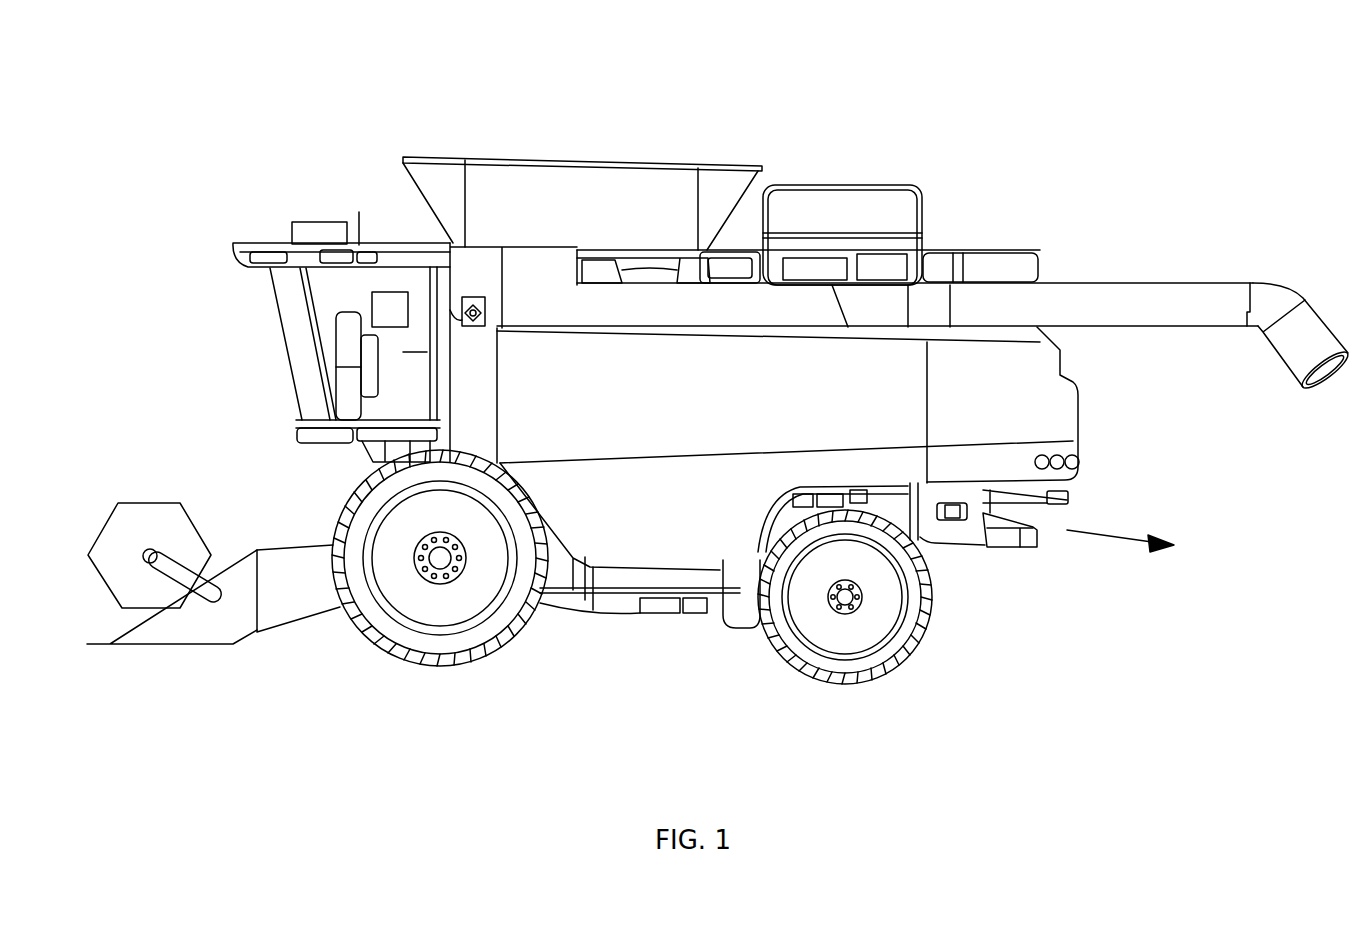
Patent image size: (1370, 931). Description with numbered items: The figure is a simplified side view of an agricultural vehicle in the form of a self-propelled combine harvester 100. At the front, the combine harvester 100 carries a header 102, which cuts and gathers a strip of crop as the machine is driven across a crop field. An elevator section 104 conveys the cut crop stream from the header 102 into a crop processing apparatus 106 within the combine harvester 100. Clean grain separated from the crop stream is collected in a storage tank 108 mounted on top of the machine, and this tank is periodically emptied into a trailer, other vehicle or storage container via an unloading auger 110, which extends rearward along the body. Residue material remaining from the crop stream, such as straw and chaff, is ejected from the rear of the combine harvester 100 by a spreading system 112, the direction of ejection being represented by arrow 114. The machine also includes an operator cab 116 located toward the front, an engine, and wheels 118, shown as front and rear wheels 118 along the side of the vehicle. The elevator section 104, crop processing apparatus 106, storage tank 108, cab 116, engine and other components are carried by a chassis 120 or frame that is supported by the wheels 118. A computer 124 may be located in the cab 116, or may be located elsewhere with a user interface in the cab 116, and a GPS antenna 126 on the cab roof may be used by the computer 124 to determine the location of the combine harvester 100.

The combine harvester 100 is at (208, 140).
The header 102 is at (180, 646).
The elevator section 104 is at (305, 606).
The crop processing apparatus 106 is at (713, 525).
The storage tank 108 is at (653, 152).
The unloading auger 110 is at (875, 313).
The spreading system 112 is at (997, 540).
The arrow 114 is at (1120, 543).
The operator cab 116 is at (303, 388).
The wheels 118 is at (491, 656).
The chassis 120 is at (640, 577).
The computer 124 is at (400, 300).
The GPS antenna 126 is at (311, 228).